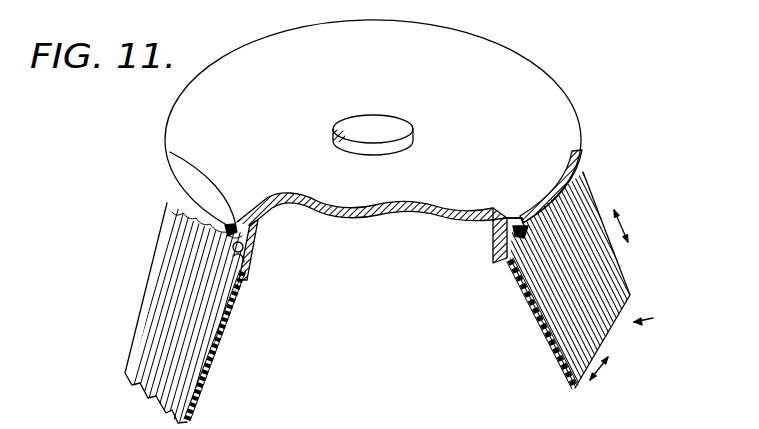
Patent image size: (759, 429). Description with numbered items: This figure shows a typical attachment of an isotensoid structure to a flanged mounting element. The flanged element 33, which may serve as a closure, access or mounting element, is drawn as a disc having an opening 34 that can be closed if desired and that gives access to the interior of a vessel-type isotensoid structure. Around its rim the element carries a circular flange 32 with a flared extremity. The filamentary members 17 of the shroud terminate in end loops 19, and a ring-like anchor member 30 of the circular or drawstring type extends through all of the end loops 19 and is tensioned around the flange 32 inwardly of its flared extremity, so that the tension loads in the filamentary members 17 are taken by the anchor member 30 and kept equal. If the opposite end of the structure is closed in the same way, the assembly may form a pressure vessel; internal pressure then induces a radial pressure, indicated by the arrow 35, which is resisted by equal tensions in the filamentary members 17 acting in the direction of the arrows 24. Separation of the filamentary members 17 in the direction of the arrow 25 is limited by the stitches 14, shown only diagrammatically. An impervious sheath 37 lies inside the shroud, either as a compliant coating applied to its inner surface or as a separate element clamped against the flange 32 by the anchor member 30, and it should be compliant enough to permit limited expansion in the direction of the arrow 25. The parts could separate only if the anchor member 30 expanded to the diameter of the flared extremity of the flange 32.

The flanged element 33 is at (525, 82).
The opening 34 is at (347, 123).
The end loops 19 is at (231, 223).
The anchor member 30 is at (243, 247).
The flange 32 is at (510, 274).
The arrows 24 is at (622, 223).
The impervious sheath 37 is at (218, 330).
The stitches 14 is at (190, 387).
The filamentary members 17 is at (557, 340).
The arrow 35 is at (653, 318).
The arrow 25 is at (600, 362).